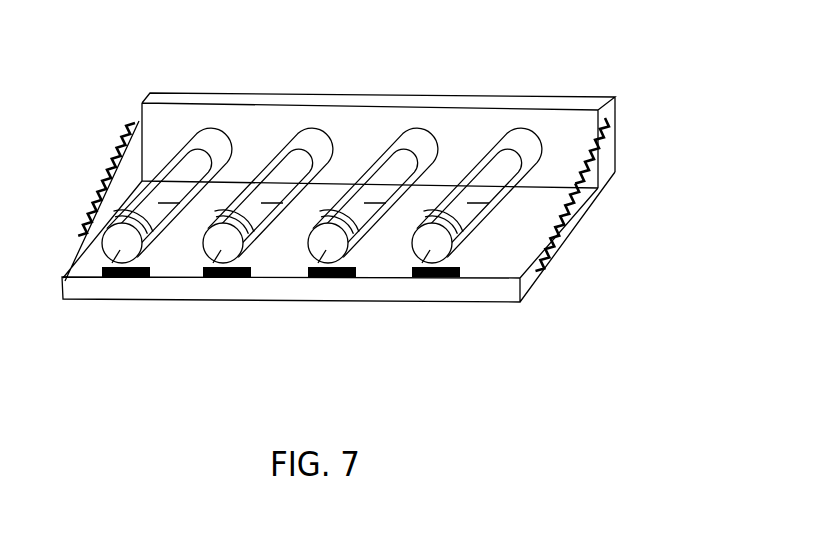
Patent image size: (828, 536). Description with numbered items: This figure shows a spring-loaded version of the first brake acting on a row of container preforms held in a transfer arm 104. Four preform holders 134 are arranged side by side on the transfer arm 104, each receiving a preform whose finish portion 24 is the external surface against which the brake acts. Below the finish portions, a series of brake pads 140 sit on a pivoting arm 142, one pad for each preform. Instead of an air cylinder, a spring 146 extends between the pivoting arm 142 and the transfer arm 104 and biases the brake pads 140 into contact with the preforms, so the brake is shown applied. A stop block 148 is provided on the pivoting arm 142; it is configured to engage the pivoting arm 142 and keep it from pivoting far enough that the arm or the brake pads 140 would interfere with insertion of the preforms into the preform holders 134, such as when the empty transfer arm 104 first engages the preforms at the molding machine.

The transfer arm 104 is at (563, 130).
The preform holders 134 is at (212, 140).
The brake pads 140 is at (143, 276).
The finish portion 24 is at (115, 276).
The pivoting arm 142 is at (487, 292).
The spring 146 is at (602, 187).
The stop block 148 is at (612, 150).